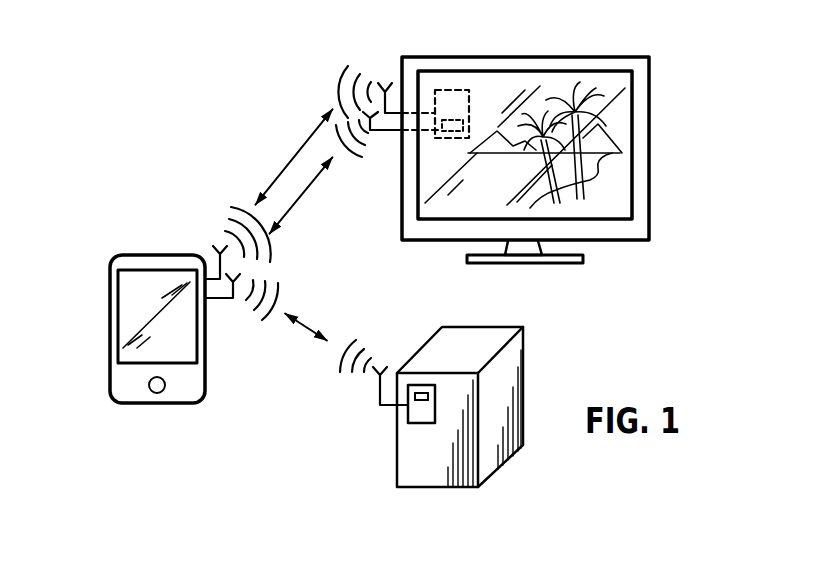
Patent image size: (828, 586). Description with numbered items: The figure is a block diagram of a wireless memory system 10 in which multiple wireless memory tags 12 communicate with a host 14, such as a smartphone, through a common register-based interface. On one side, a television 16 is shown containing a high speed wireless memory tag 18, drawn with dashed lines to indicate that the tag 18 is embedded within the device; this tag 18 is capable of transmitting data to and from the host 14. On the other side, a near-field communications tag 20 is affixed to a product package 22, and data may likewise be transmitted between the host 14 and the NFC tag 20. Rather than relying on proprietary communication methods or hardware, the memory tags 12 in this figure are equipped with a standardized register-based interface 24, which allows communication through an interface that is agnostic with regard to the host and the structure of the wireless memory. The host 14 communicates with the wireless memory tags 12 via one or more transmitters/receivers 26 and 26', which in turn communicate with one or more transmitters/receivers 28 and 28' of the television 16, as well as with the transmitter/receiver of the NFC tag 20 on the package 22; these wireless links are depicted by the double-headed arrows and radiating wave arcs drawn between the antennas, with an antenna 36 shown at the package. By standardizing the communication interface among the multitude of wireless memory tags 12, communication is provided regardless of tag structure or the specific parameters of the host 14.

The wireless memory system 10 is at (182, 100).
The wireless memory tags 12 is at (423, 424).
The host 14 is at (110, 327).
The television 16 is at (589, 57).
The high speed wireless memory tag 18 is at (452, 89).
The near-field communications (NFC) tag 20 is at (433, 400).
The product package 22 is at (497, 328).
The standardized register-based interface 24 is at (466, 127).
The transmitter/receiver 26 is at (211, 243).
The transmitter/receiver 26' is at (241, 320).
The transmitter/receiver 28 is at (360, 80).
The transmitter/receiver 28' is at (369, 156).
The antenna of appliance 36 is at (379, 393).